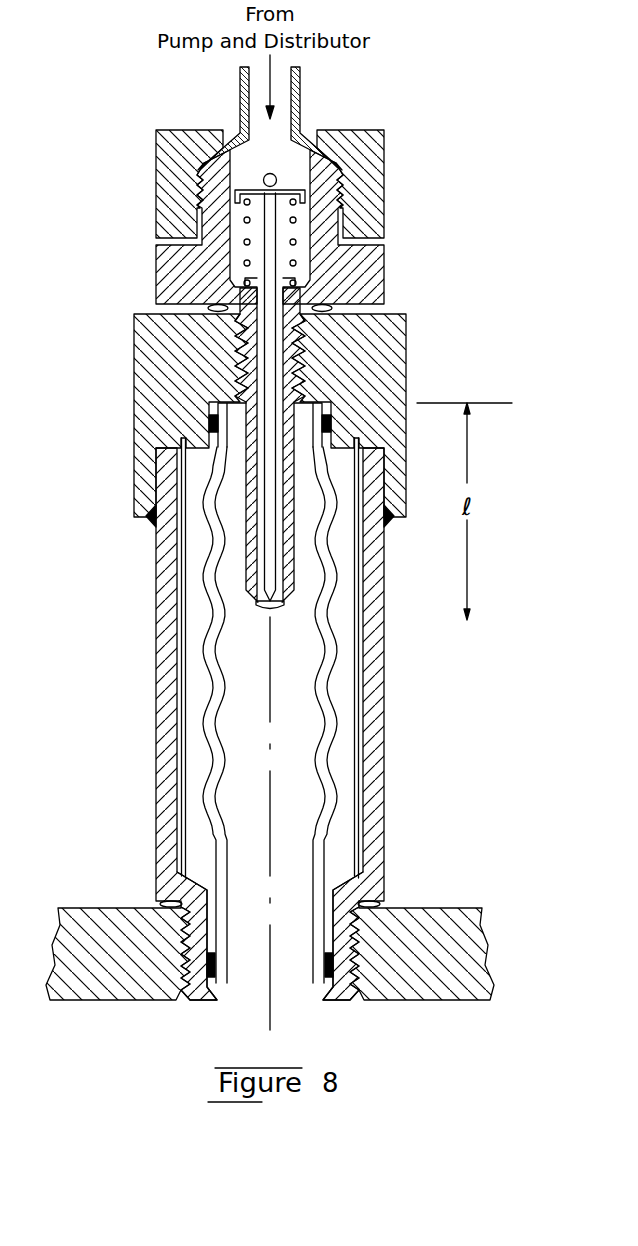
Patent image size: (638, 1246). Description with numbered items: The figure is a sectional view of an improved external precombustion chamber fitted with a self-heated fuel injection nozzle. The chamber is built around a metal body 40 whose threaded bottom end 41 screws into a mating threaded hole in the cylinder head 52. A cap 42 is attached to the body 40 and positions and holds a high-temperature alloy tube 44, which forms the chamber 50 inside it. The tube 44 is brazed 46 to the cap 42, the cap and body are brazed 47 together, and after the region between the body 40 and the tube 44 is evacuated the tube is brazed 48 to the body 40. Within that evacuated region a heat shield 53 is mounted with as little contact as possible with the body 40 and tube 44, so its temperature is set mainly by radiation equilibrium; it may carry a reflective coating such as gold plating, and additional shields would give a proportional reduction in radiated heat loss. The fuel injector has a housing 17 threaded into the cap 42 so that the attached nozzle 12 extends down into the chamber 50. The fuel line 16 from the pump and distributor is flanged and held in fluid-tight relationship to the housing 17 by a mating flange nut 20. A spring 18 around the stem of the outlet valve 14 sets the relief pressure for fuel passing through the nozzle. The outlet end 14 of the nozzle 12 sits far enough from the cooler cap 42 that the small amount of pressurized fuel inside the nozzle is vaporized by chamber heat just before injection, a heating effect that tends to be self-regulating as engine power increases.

The nozzle 12 is at (246, 598).
The outlet valve 14 is at (279, 606).
The fuel line 16 is at (300, 98).
The housing 17 is at (384, 268).
The spring 18 is at (247, 244).
The flange nut 20 is at (384, 182).
The metal body 40 is at (379, 728).
The bottom end 41 is at (187, 1002).
The cap 42 is at (401, 350).
The high-temperature alloy tube 44 is at (220, 717).
The braze 46 is at (208, 417).
The braze 47 is at (146, 524).
The braze 48 is at (325, 962).
The chamber 50 is at (281, 816).
The cylinder head 52 is at (478, 945).
The heat shield 53 is at (182, 658).